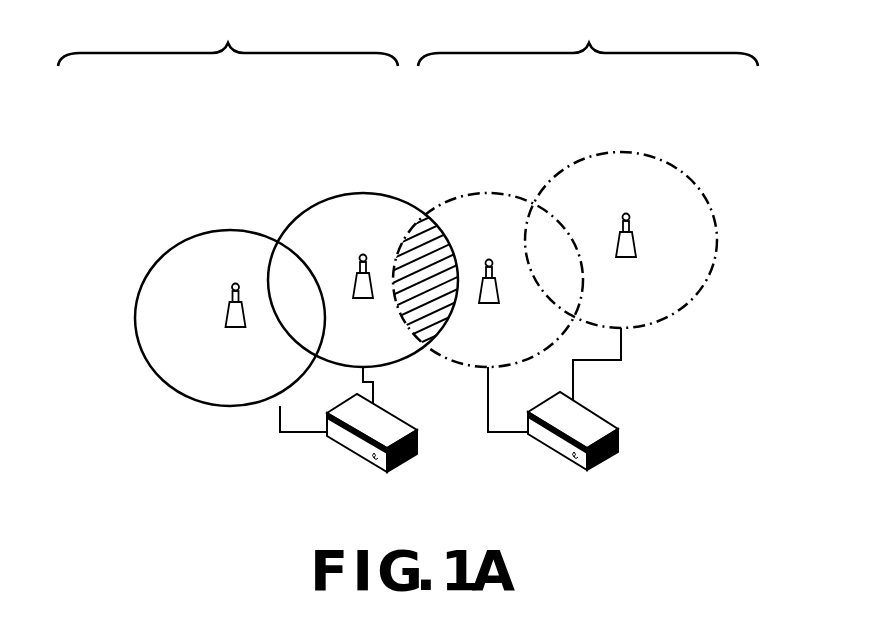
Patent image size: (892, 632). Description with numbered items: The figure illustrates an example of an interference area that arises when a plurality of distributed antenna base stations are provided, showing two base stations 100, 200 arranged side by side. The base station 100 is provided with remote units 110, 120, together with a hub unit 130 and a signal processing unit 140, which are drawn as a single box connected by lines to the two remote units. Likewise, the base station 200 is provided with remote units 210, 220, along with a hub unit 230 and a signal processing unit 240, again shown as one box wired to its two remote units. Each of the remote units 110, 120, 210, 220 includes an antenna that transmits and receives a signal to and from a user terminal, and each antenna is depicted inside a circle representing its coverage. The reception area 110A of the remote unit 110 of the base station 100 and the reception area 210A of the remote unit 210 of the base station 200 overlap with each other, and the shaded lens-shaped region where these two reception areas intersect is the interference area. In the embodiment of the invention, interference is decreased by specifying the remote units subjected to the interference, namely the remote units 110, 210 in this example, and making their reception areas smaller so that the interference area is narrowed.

The base station 100 is at (228, 37).
The base station 200 is at (588, 37).
The reception area 110A is at (324, 200).
The reception area 210A is at (475, 193).
The remote unit 110 is at (364, 300).
The remote unit 120 is at (236, 329).
The remote unit 210 is at (490, 305).
The remote unit 220 is at (627, 259).
The hub unit 130 is at (342, 450).
The signal processing unit 140 is at (343, 447).
The hub unit 230 is at (560, 452).
The signal processing unit 240 is at (548, 450).